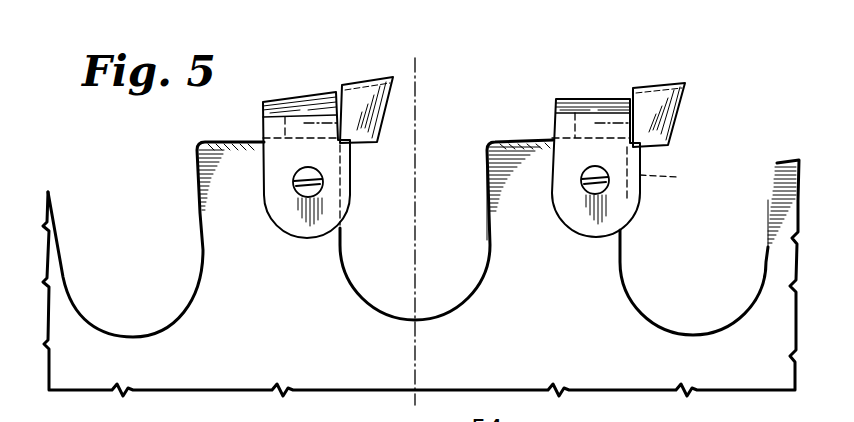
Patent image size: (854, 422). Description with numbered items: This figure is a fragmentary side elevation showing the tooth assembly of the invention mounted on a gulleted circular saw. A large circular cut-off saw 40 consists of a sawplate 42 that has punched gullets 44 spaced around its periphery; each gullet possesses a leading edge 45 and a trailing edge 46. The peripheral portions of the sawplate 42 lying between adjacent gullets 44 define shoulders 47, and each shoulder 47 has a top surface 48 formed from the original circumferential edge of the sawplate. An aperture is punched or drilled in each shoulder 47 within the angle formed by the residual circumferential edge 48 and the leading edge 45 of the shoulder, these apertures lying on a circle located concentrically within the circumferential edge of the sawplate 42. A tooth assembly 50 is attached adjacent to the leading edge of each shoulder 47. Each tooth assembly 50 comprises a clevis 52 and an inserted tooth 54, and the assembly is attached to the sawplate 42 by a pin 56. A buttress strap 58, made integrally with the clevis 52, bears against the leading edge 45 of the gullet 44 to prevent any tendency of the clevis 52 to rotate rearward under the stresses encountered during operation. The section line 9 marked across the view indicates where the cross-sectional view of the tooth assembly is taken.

The section line 9- 9 is at (392, 410).
The circular cut-off saw 40 is at (397, 104).
The sawplate 42 is at (750, 372).
The gullet 44 is at (725, 141).
The leading edge 45 is at (621, 250).
The trailing edge 46 is at (486, 247).
The shoulder 47 is at (563, 279).
The top surface 48 is at (516, 138).
The tooth assembly 50 is at (621, 133).
The clevis 52 is at (545, 177).
The inserted tooth 54 is at (668, 88).
The pin 56 is at (585, 191).
The buttress strap 58 is at (676, 178).